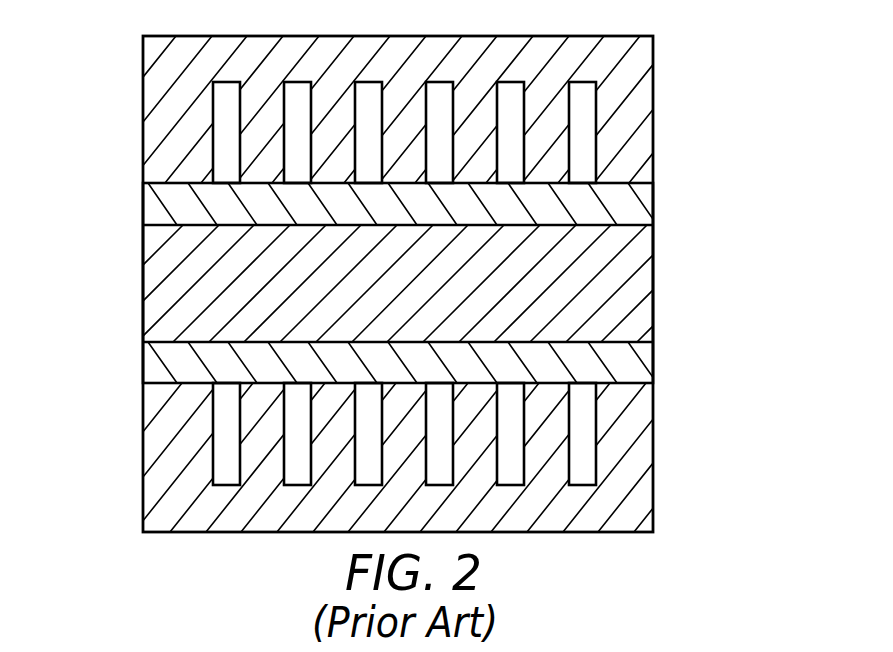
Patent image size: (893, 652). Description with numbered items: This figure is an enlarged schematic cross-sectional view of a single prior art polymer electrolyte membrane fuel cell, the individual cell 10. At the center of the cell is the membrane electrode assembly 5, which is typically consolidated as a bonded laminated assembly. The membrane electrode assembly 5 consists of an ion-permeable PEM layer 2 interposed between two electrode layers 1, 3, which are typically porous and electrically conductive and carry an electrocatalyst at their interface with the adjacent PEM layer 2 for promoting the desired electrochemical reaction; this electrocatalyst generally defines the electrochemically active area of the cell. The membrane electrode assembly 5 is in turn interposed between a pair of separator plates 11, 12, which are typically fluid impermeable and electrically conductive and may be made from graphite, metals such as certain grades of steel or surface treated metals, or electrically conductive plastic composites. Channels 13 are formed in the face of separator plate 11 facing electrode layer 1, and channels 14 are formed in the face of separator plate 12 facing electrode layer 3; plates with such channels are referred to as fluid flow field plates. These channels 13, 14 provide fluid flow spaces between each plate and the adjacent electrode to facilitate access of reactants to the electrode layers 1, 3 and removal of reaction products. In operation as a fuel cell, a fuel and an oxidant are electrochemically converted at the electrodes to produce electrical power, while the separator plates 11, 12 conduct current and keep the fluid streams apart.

The individual cell 10 is at (400, 272).
The separator plate 11 is at (373, 109).
The separator plate 12 is at (405, 457).
The channels 13 is at (597, 114).
The channels 14 is at (595, 415).
The electrode layer 1 is at (638, 213).
The PEM layer 2 is at (638, 282).
The electrode layer 3 is at (638, 366).
The membrane electrode assembly 5 is at (410, 281).